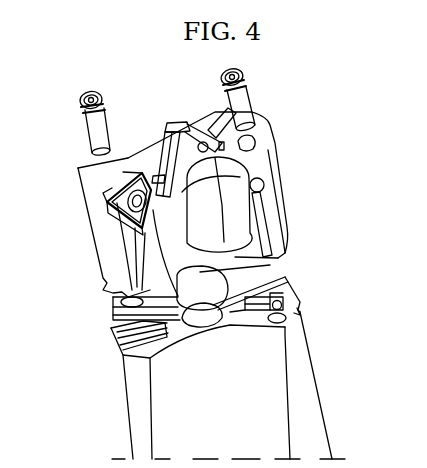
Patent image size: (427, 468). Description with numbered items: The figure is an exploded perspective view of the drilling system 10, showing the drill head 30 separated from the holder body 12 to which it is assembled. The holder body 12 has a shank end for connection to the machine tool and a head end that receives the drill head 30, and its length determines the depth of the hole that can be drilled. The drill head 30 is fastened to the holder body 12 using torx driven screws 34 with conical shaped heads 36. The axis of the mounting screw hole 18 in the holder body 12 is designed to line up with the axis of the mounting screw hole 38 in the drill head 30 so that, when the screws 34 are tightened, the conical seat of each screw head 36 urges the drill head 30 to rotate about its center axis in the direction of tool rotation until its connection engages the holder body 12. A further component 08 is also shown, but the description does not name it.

The drilling system 10 is at (313, 218).
The holder body 12 is at (108, 395).
The base plate 08 is at (121, 301).
The mounting screw hole 18 is at (303, 318).
The drill head 30 is at (73, 225).
The screws 34 is at (104, 124).
The screw head 36 is at (80, 105).
The mounting screw hole 38 is at (113, 163).